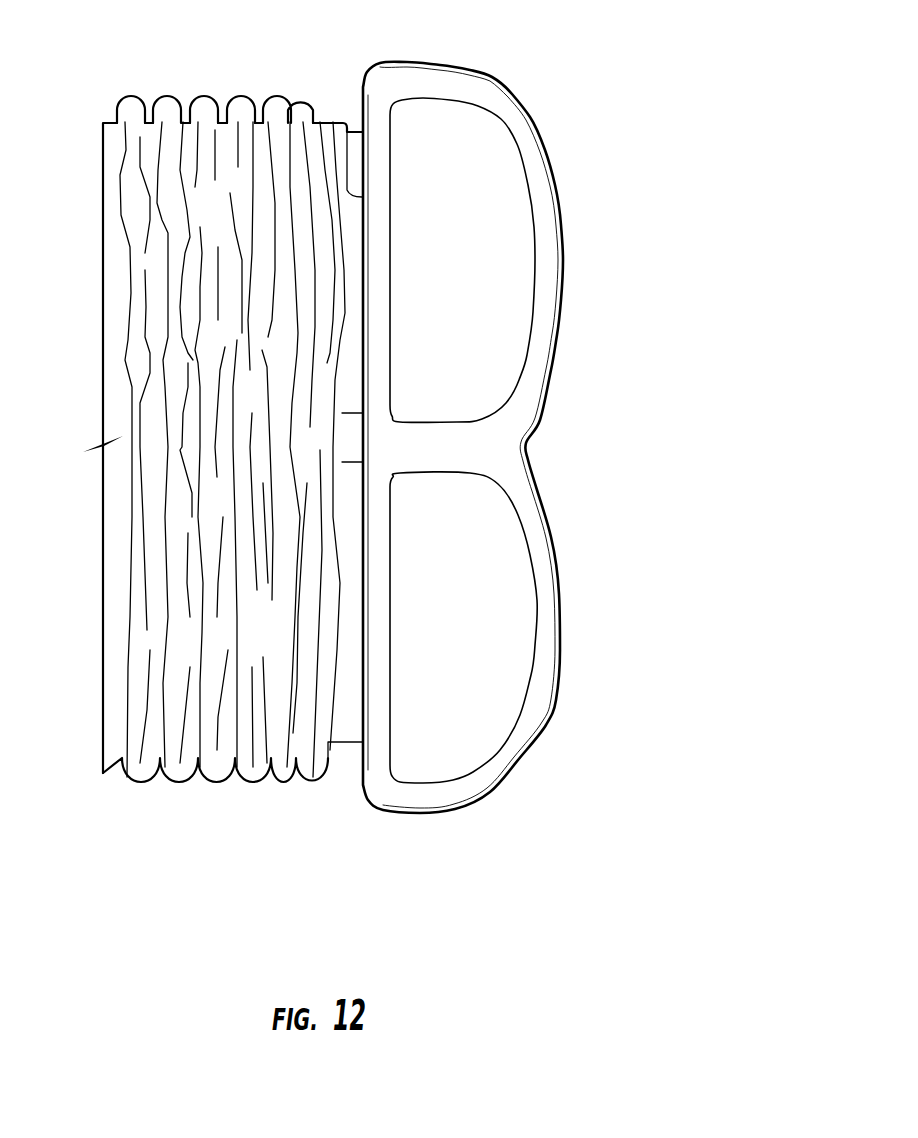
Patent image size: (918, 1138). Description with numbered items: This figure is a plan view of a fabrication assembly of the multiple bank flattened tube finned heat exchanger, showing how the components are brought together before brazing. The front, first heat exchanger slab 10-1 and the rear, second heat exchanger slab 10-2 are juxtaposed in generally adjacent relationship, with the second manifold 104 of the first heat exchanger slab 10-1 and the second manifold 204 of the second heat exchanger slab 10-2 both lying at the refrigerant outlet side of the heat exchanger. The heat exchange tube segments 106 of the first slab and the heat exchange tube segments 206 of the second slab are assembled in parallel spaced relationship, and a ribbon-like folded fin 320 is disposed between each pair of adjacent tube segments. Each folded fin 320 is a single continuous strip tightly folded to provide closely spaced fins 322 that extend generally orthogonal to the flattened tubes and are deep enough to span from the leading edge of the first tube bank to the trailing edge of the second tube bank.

The second manifold 204 is at (472, 78).
The second manifold 104 is at (516, 772).
The second heat exchanger slab 10-2 is at (590, 192).
The first heat exchanger slab 10-1 is at (575, 706).
The heat exchange tube segments 206 is at (348, 418).
The heat exchange tube segments 106 is at (345, 742).
The folded fin 320 is at (226, 845).
The fins 322 is at (160, 571).